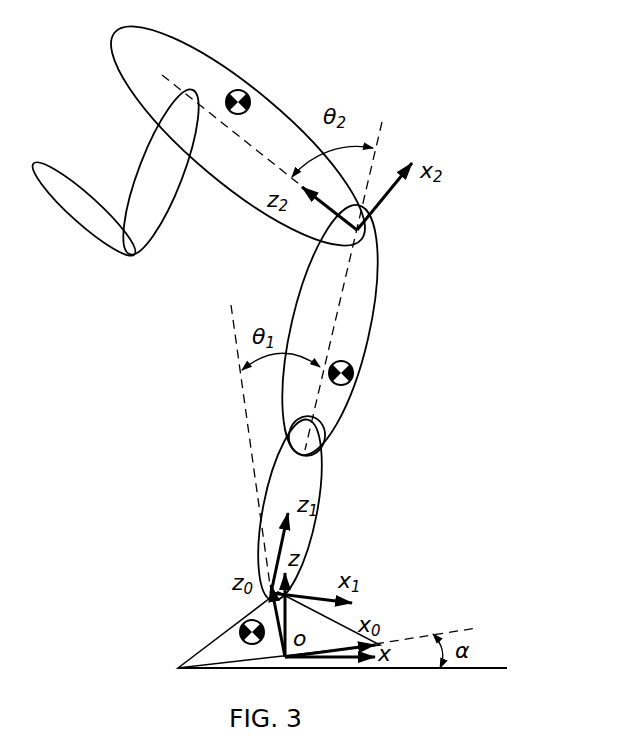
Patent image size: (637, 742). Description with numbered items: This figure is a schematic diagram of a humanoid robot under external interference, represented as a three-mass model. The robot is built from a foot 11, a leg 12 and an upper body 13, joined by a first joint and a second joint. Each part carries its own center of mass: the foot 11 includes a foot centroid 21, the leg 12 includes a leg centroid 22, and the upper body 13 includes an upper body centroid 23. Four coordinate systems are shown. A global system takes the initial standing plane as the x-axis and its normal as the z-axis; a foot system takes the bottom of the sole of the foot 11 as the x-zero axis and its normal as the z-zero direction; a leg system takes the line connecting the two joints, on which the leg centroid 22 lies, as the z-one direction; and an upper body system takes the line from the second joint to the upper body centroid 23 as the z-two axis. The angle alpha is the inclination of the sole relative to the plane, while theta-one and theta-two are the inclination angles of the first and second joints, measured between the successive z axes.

The foot 11 is at (224, 634).
The leg 12 is at (362, 358).
The upper body 13 is at (190, 43).
The foot centroid 21 is at (245, 626).
The leg centroid 22 is at (350, 383).
The upper body centroid 23 is at (246, 93).